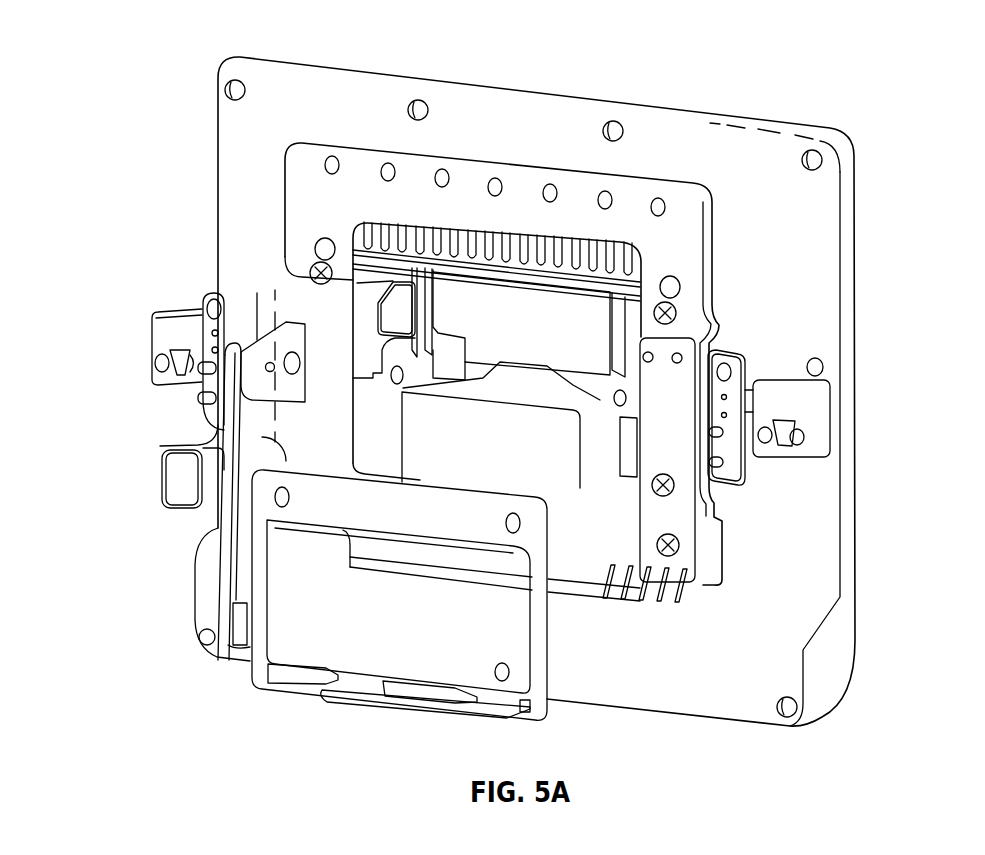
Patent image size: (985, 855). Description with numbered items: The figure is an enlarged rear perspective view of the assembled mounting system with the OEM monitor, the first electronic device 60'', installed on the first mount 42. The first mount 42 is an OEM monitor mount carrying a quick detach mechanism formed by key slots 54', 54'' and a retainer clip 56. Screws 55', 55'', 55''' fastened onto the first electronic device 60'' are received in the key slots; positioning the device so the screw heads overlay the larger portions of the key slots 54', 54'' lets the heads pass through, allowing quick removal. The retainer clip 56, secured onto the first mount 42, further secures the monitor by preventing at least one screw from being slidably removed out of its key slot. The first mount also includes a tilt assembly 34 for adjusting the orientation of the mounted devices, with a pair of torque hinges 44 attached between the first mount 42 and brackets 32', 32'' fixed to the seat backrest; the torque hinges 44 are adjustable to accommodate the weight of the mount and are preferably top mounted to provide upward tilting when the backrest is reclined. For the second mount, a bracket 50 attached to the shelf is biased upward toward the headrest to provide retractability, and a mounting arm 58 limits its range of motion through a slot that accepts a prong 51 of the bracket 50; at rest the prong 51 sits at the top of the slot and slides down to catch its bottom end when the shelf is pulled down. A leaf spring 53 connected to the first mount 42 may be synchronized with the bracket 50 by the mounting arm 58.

The first electronic device 60'' is at (568, 391).
The first mount 42 is at (462, 175).
The key slot 54' is at (363, 138).
The key slot 54'' is at (636, 161).
The screw 55' is at (230, 215).
The screw 55'' is at (766, 196).
The screw 55''' is at (739, 658).
The retainer clip 56 is at (716, 464).
The torque hinge 44 is at (748, 386).
The bracket 32'' is at (866, 414).
The tilt assembly 34 is at (805, 389).
The bracket 32' is at (156, 349).
The mounting arm 58 is at (228, 427).
The leaf spring 53 is at (177, 492).
The bracket 50 is at (305, 501).
The prong 51 is at (223, 645).